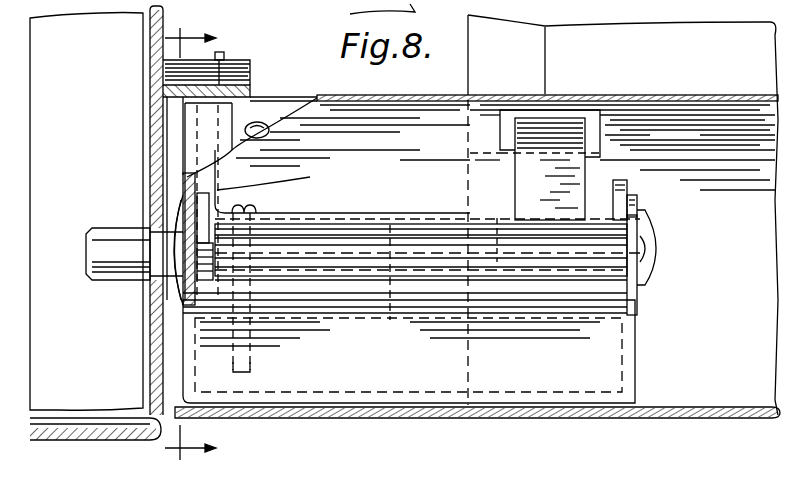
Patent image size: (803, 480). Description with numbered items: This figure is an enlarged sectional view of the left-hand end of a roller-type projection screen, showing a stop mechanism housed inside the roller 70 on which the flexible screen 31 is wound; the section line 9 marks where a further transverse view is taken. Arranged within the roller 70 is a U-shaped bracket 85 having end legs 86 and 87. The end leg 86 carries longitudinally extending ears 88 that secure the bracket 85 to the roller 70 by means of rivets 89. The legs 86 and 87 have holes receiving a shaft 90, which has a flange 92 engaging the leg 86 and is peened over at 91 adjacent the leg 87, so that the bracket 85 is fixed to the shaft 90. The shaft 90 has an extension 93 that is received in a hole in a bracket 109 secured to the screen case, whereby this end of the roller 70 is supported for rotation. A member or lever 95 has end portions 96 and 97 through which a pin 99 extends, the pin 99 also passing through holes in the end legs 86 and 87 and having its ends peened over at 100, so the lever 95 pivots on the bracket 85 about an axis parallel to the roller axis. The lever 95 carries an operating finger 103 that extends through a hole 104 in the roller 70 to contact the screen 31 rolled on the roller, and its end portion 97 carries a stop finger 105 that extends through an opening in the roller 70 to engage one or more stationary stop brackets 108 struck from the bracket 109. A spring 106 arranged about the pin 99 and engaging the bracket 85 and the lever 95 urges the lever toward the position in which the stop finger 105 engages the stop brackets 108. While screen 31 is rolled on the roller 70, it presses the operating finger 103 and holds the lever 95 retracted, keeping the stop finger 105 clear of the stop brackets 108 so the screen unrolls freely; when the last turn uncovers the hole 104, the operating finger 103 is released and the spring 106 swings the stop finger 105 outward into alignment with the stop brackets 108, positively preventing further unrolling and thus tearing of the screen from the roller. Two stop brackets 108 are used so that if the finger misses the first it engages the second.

The section line 9 is at (190, 242).
The flexible screen 31 is at (468, 73).
The roller 70 is at (427, 412).
The U-shaped bracket 85 is at (607, 353).
The end leg 86 is at (190, 158).
The end leg 87 is at (634, 292).
The ears 88 is at (196, 124).
The rivets 89 is at (260, 125).
The shaft 90 is at (427, 289).
The peened over portion 91 is at (655, 270).
The flange 92 is at (165, 290).
The extension 93 is at (104, 276).
The member or lever 95 is at (388, 217).
The end portion 96 is at (628, 183).
The end portion 97 is at (255, 195).
The pin 99 is at (498, 220).
The peened over ends 100 is at (185, 205).
The operating finger 103 is at (520, 170).
The hole 104 is at (595, 135).
The stop finger 105 is at (221, 52).
The spring 106 is at (266, 210).
The stop brackets 108 is at (247, 70).
The bracket 109 is at (150, 36).